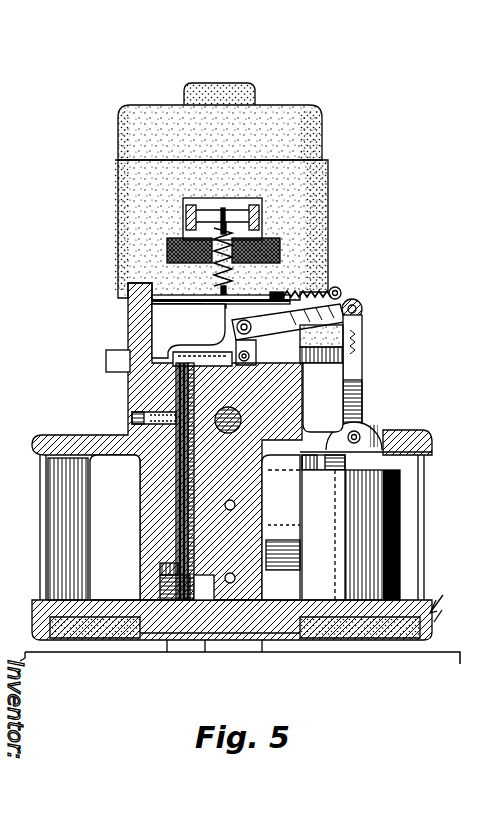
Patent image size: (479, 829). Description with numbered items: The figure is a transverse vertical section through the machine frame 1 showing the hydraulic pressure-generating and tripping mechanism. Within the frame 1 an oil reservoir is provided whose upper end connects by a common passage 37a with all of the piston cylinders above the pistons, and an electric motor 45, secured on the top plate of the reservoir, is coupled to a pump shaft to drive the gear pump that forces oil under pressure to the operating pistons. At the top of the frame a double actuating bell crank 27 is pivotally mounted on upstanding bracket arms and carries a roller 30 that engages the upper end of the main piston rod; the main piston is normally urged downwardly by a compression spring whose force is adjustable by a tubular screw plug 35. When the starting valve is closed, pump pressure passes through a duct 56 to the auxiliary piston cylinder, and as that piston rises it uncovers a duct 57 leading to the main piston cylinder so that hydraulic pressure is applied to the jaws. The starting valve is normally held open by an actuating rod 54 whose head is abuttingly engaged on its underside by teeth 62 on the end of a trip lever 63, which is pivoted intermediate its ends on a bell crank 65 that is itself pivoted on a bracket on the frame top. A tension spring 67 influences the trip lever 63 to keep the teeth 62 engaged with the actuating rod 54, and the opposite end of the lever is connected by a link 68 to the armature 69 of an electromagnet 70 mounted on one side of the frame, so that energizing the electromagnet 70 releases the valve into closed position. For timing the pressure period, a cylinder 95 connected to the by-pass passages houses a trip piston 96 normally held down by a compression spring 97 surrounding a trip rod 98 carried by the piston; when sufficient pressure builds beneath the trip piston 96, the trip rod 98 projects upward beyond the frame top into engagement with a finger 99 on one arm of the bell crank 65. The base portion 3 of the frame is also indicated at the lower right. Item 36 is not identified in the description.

The frame 1 is at (439, 599).
The base 3 is at (439, 618).
The double actuating bell crank 27 is at (256, 204).
The roller 30 is at (250, 215).
The tubular screw plug 35 is at (212, 300).
The spring 36 is at (305, 292).
The common passage 37a is at (242, 416).
The electric motor 45 is at (119, 212).
The actuating rod 54 is at (205, 317).
The duct 56 is at (236, 580).
The duct 57 is at (262, 498).
The teeth 62 is at (250, 332).
The trip lever 63 is at (352, 300).
The bell crank 65 is at (205, 338).
The tension spring 67 is at (340, 290).
The link 68 is at (364, 416).
The armature 69 is at (370, 468).
The electromagnet 70 is at (402, 518).
The cylinder 95 is at (190, 548).
The trip piston 96 is at (178, 545).
The compression spring 97 is at (196, 402).
The trip rod 98 is at (160, 390).
The finger 99 is at (128, 347).